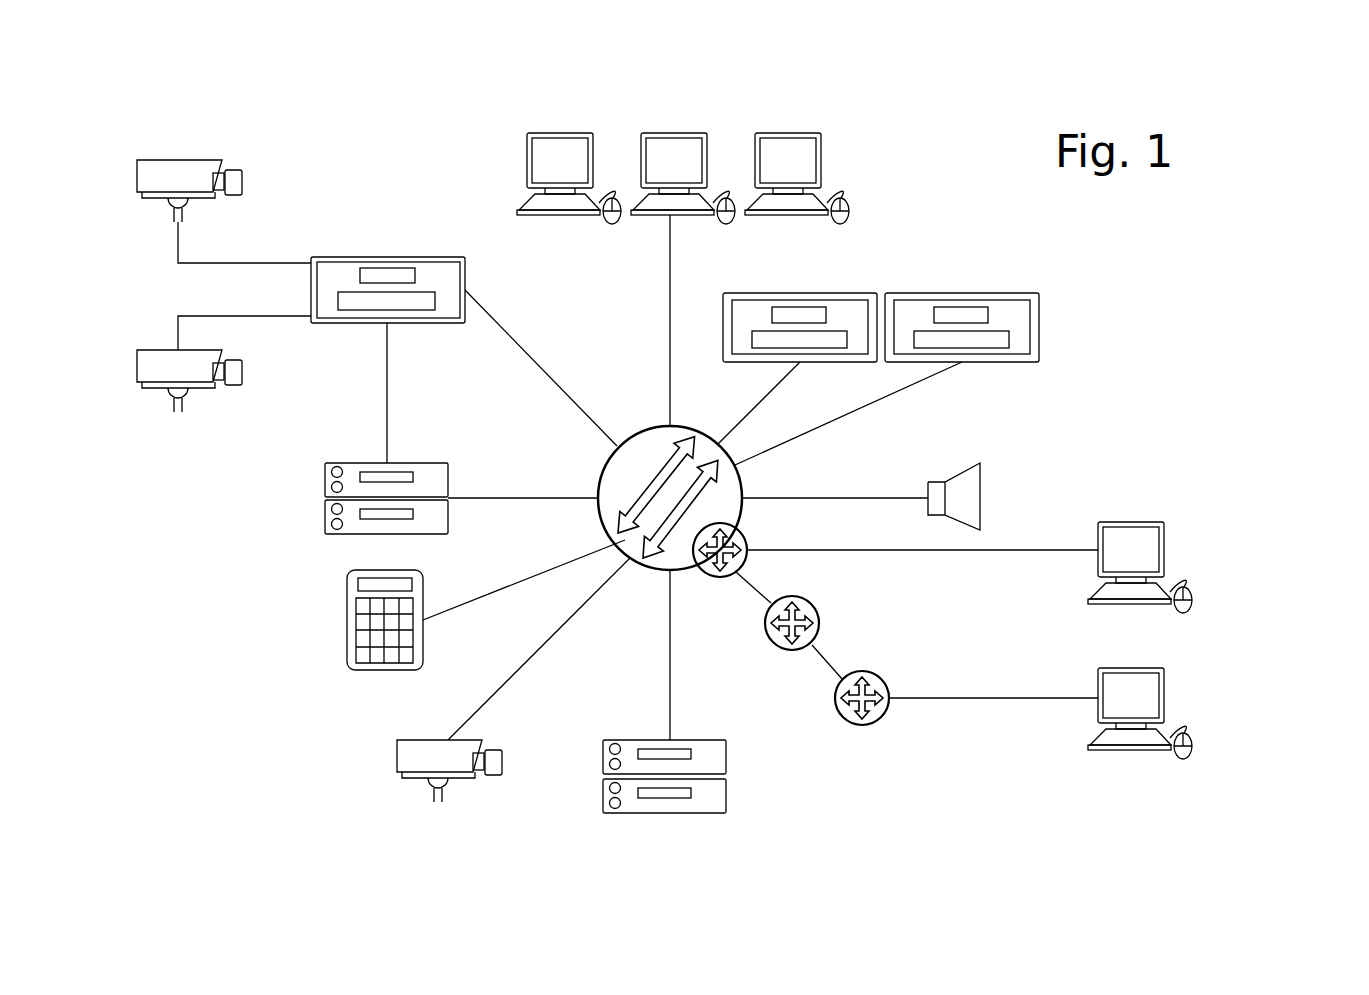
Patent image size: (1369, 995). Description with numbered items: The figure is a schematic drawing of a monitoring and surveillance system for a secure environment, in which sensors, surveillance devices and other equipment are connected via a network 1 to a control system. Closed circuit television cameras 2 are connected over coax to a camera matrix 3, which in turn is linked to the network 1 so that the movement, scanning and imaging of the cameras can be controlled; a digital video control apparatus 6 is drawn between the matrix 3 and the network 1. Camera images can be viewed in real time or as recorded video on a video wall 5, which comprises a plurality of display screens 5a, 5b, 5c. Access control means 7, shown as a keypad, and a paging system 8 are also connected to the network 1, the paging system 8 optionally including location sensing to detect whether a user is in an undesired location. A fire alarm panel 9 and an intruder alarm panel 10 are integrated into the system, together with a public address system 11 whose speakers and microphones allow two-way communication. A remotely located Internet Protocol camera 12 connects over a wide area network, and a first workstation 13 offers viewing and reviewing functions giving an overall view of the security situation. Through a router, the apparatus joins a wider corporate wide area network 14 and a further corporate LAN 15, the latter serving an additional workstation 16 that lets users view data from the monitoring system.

The network 1 is at (645, 427).
The closed circuit television camera 2 is at (170, 160).
The camera matrix 3 is at (453, 257).
The video wall 5 is at (625, 241).
The display screen 5a is at (560, 133).
The display screen 5b is at (705, 148).
The display screen 5c is at (795, 133).
The digital video control 6 is at (413, 463).
The access control means 7 is at (347, 590).
The paging system 8 is at (690, 740).
The fire alarm panel 9 is at (750, 362).
The intruder alarm panel 10 is at (1040, 313).
The public address system 11 is at (980, 492).
The Internet Protocol camera 12 is at (397, 753).
The first work station 13 is at (1128, 522).
The corporate wide area network 14 is at (764, 623).
The corporate LAN 15 is at (835, 698).
The workstation 16 is at (1128, 668).